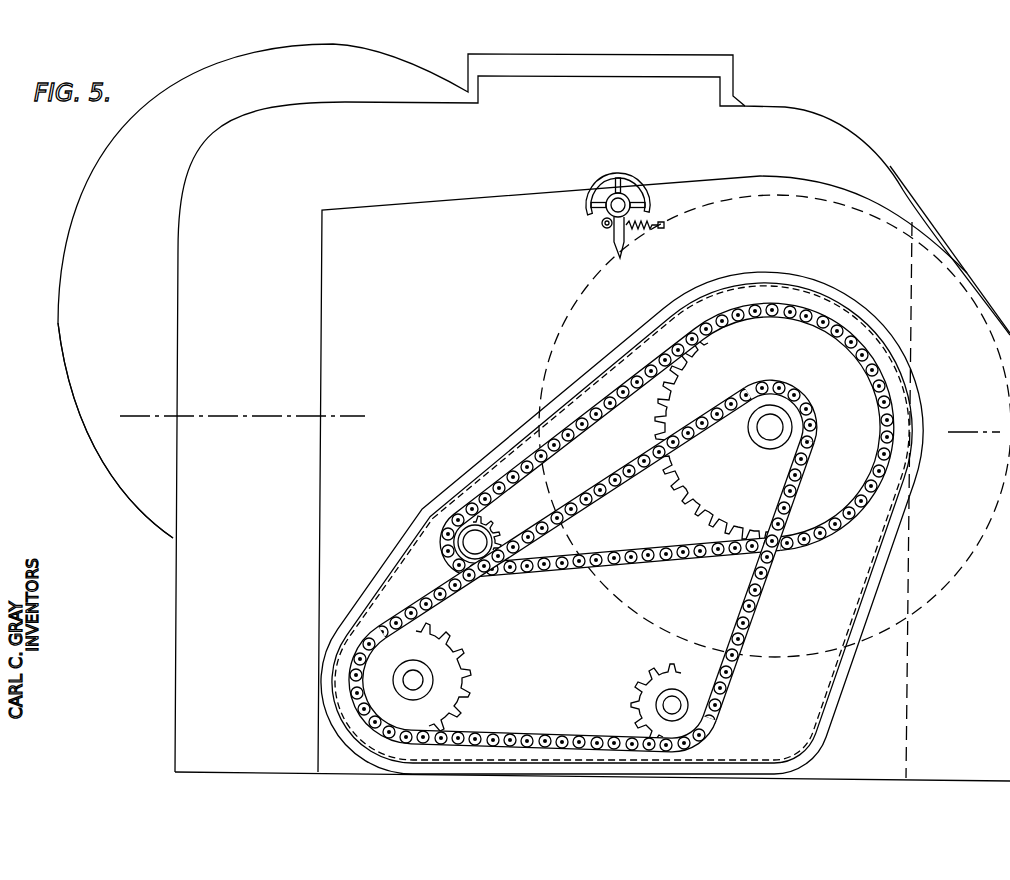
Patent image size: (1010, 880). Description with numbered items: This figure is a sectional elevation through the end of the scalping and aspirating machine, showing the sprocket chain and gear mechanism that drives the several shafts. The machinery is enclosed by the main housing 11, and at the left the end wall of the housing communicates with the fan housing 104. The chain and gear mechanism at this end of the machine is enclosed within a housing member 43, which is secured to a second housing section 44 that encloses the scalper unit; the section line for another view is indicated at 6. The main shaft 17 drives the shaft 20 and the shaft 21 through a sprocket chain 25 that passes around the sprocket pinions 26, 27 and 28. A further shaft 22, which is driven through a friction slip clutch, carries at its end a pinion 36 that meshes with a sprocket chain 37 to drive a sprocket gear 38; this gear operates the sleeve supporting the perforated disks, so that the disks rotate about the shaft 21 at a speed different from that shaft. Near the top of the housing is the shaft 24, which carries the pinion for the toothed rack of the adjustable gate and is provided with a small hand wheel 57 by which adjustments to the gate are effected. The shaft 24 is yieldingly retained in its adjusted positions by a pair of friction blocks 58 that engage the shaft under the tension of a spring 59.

The main housing 11 is at (820, 127).
The fan housing 104 is at (110, 445).
The section line 6 is at (145, 408).
The second housing section 44 is at (945, 281).
The housing member 43 is at (840, 675).
The sprocket pinion 28 is at (738, 452).
The sprocket pinion 26 is at (455, 686).
The sprocket pinion 27 is at (647, 700).
The shaft 22 is at (494, 524).
The shaft 21 is at (770, 430).
The shaft 20 is at (678, 707).
The main shaft 17 is at (416, 679).
The sprocket gear 38 is at (828, 500).
The sprocket chain 37 is at (680, 550).
The pinion 36 is at (552, 538).
The sprocket chain 25 is at (752, 618).
The hand wheel 57 is at (633, 176).
The shaft 24 is at (612, 211).
The friction blocks 58 is at (617, 250).
The spring 59 is at (643, 232).